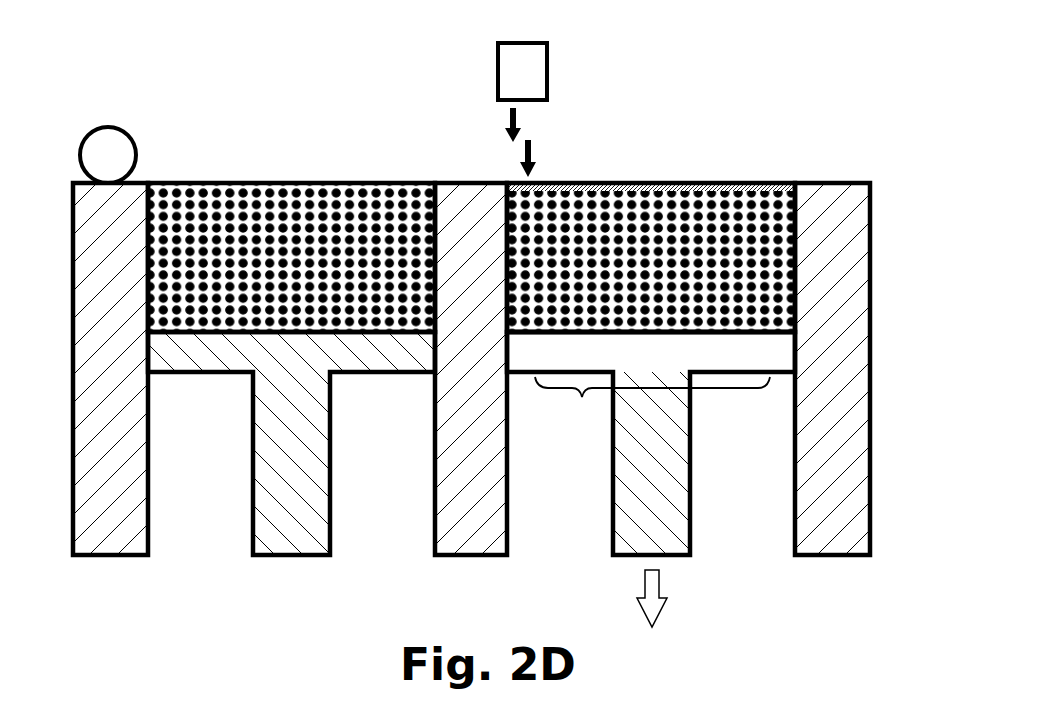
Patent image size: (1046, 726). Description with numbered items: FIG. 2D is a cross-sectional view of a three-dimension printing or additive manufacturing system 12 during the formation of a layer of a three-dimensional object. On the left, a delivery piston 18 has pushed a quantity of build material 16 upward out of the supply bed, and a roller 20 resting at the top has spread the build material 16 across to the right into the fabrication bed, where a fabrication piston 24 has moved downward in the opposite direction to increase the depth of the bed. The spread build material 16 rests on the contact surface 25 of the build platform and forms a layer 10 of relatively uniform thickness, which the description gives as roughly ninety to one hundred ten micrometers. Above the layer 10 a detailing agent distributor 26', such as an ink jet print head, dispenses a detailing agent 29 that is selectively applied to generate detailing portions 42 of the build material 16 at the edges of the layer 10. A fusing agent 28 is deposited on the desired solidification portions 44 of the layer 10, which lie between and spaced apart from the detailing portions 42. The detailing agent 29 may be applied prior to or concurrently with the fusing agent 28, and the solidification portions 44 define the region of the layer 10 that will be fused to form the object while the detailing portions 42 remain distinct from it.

The layer 10 is at (732, 176).
The three-dimension printing or additive manufacturing system 12 is at (322, 124).
The build material 16 is at (224, 251).
The delivery piston 18 is at (253, 523).
The roller 20 is at (108, 127).
The fabrication piston 24 is at (690, 533).
The contact surface 25 is at (720, 326).
The detailing agent distributor 26' is at (579, 56).
The fusing agent 28 is at (652, 176).
The detailing agent 29 is at (534, 163).
The detailing portion 42 is at (513, 176).
The solidification portion 44 is at (652, 412).